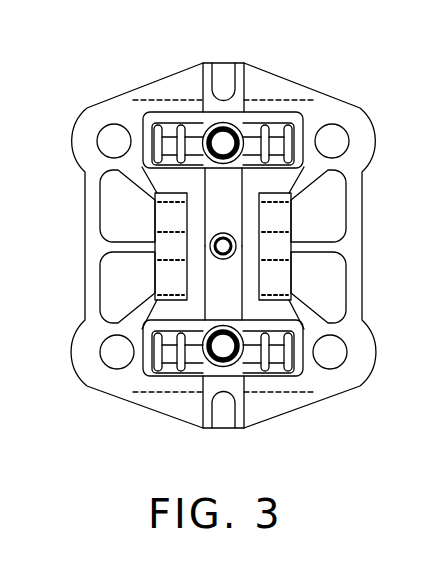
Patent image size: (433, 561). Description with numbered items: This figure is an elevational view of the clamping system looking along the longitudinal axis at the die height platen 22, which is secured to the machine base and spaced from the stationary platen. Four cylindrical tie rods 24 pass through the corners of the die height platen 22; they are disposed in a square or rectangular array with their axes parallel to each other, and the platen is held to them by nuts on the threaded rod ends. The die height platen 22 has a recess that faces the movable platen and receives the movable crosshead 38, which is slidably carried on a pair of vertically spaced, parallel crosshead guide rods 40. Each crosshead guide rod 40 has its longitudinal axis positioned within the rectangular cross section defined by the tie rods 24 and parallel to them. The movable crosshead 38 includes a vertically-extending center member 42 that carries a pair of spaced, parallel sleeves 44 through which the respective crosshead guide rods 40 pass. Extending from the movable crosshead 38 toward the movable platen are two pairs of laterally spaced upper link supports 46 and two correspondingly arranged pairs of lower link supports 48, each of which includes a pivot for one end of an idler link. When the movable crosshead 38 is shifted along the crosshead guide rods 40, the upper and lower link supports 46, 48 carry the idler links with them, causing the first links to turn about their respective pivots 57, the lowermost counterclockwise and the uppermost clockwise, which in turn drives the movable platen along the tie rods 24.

The die height platen 22 is at (258, 82).
The tie rods 24 is at (112, 127).
The movable crosshead 38 is at (237, 184).
The crosshead guide rods 40 is at (218, 138).
The center member 42 is at (237, 288).
The sleeves 44 is at (242, 128).
The upper link supports 46 is at (148, 174).
The lower link supports 48 is at (157, 370).
The pivots 57 is at (160, 219).